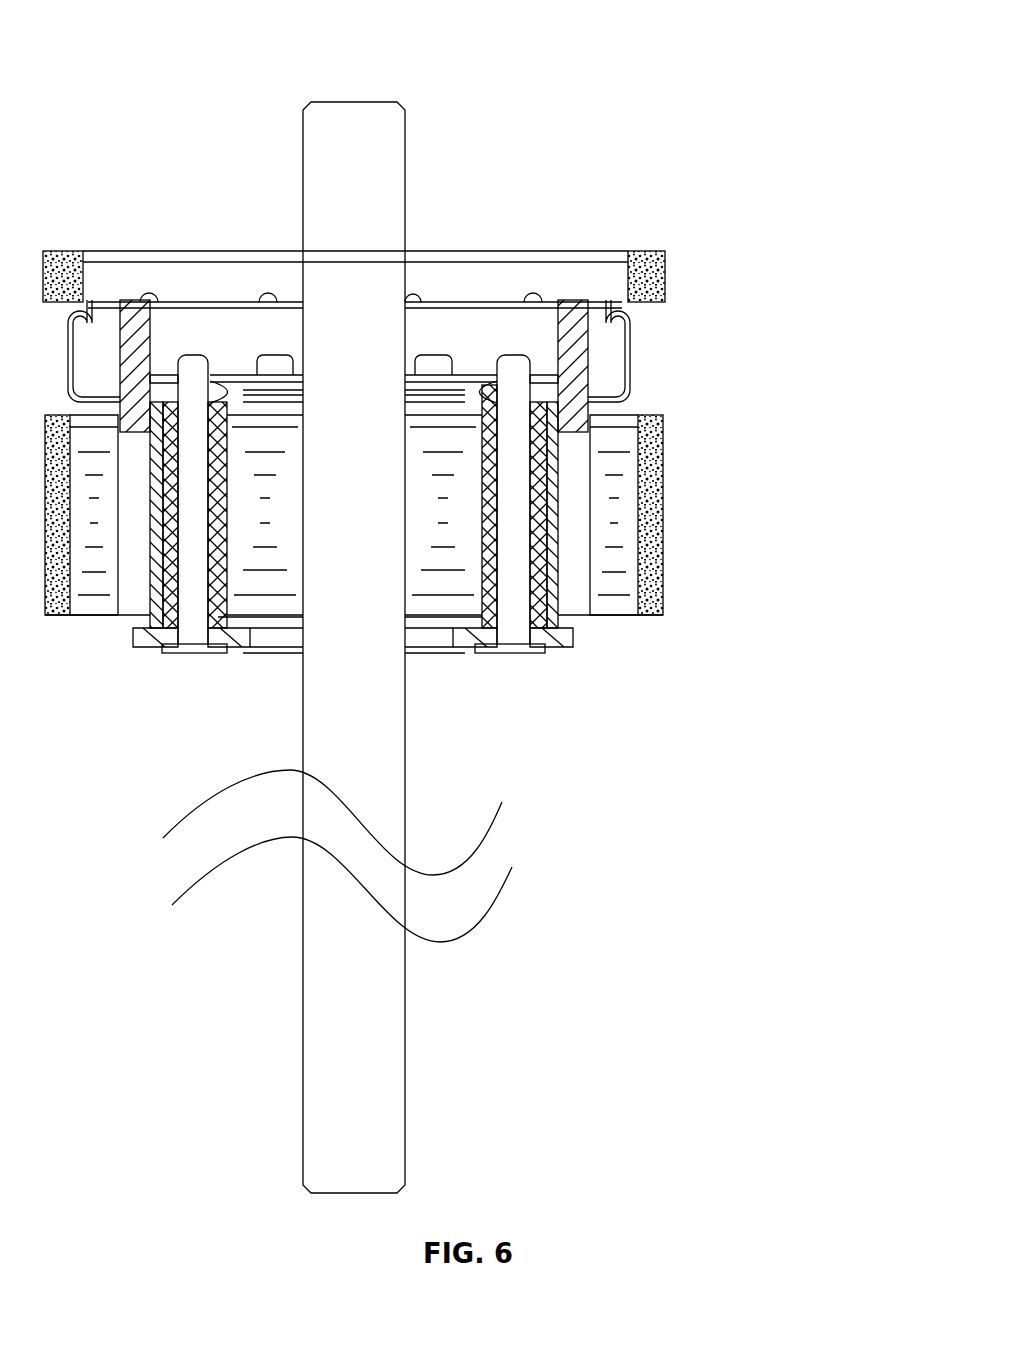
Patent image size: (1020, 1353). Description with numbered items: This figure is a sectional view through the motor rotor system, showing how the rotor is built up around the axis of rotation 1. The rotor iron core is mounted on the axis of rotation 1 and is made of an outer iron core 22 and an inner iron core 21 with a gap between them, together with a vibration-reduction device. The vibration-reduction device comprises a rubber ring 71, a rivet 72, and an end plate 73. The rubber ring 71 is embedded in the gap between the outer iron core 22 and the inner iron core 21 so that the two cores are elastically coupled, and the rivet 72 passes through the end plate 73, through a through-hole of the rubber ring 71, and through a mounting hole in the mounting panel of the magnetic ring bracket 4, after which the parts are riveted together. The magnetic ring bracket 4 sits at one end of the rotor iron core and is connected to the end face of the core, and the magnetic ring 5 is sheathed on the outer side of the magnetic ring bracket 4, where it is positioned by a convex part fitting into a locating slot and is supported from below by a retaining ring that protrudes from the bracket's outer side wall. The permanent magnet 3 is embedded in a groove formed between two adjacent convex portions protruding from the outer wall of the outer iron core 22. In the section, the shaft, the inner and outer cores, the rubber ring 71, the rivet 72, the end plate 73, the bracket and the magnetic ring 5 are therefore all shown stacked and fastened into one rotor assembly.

The axis of rotation 1 is at (362, 238).
The permanent magnet 3 is at (648, 505).
The magnetic ring bracket 4 is at (567, 307).
The magnetic ring 5 is at (666, 262).
The inner iron core 21 is at (450, 552).
The outer iron core 22 is at (620, 473).
The rubber ring 71 is at (222, 385).
The rivet 72 is at (512, 437).
The end plate 73 is at (557, 632).